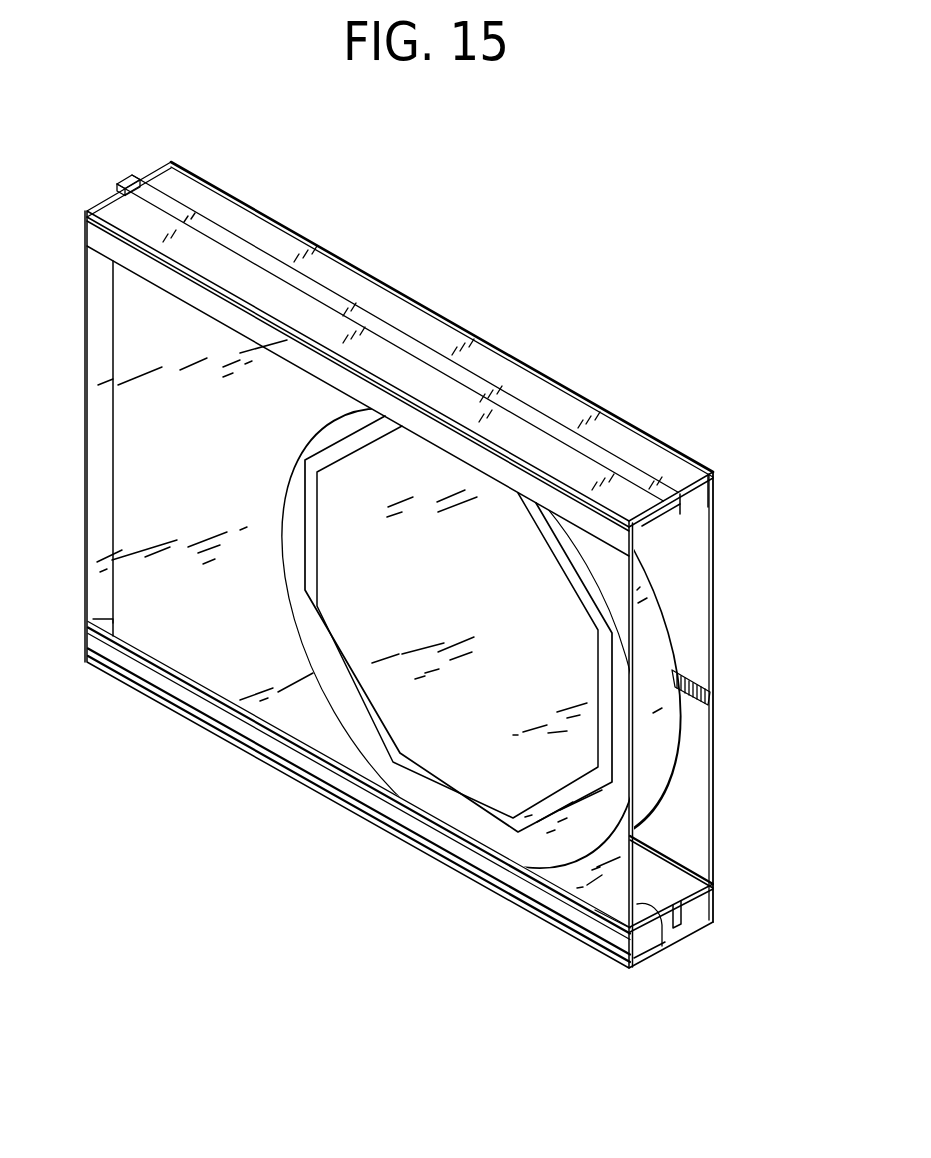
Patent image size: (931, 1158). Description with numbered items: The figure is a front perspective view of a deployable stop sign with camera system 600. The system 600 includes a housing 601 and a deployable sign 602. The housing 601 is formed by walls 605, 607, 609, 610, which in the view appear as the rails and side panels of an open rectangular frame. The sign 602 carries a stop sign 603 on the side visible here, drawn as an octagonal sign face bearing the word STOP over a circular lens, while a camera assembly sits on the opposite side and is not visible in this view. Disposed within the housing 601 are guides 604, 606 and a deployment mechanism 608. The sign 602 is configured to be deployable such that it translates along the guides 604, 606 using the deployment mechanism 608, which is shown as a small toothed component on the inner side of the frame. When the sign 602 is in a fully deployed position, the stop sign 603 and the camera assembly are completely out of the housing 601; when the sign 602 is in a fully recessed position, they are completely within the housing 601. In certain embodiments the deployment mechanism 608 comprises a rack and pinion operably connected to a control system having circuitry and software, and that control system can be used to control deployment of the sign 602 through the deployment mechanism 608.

The deployable stop sign with camera system 600 is at (620, 365).
The housing 601 is at (720, 530).
The deployable sign 602 is at (343, 698).
The stop sign 603 is at (472, 777).
The guide 604 is at (607, 903).
The wall 605 is at (716, 571).
The guide 606 is at (313, 320).
The wall 607 is at (662, 946).
The deployment mechanism 608 is at (697, 684).
The wall 609 is at (272, 220).
The wall 610 is at (207, 731).